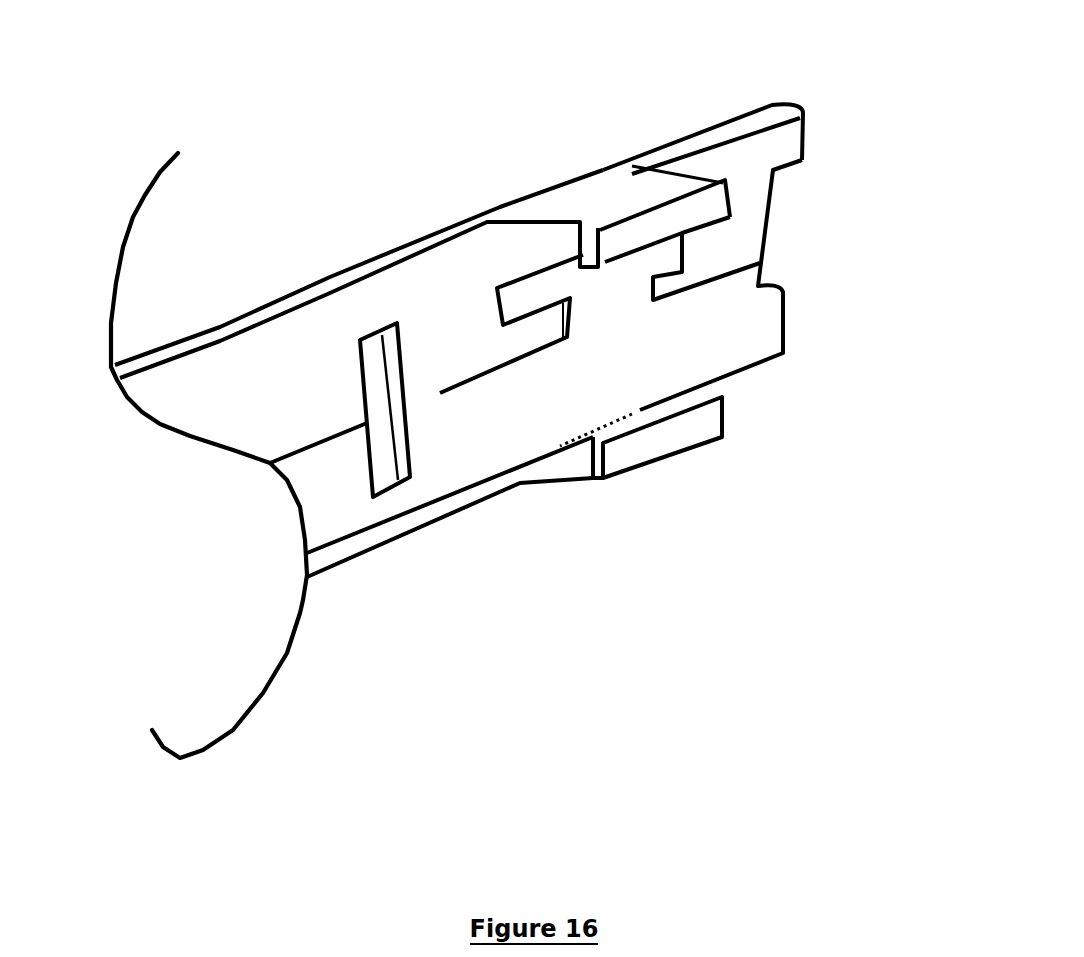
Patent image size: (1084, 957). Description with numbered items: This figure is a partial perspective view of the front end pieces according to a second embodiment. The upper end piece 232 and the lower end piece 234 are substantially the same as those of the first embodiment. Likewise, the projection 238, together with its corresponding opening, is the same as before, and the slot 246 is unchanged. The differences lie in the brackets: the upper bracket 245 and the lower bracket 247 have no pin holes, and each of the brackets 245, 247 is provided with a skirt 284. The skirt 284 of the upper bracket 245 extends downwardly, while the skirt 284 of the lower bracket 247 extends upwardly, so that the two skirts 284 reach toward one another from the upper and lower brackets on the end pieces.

The upper end piece 232 is at (390, 250).
The lower end piece 234 is at (408, 520).
The upper bracket 245 is at (603, 197).
The skirt 284 is at (697, 208).
The projection 238 is at (647, 257).
The slot 246 is at (403, 396).
The lower bracket 247 is at (655, 425).